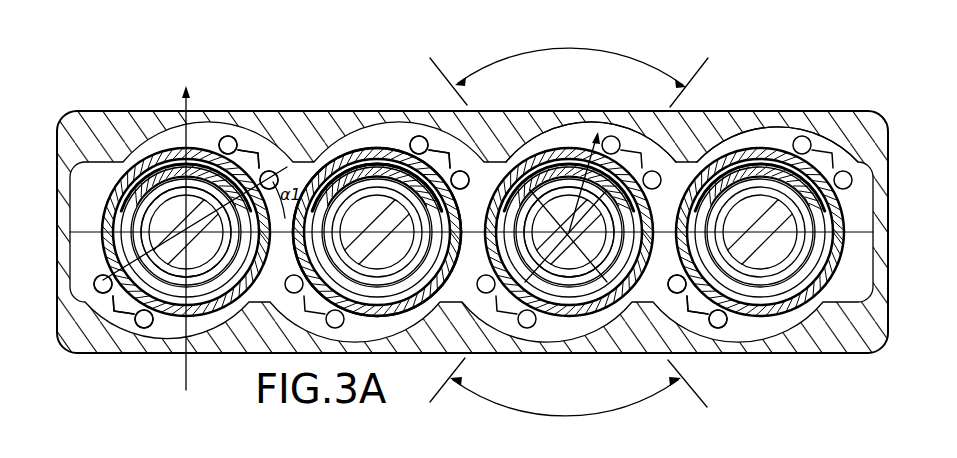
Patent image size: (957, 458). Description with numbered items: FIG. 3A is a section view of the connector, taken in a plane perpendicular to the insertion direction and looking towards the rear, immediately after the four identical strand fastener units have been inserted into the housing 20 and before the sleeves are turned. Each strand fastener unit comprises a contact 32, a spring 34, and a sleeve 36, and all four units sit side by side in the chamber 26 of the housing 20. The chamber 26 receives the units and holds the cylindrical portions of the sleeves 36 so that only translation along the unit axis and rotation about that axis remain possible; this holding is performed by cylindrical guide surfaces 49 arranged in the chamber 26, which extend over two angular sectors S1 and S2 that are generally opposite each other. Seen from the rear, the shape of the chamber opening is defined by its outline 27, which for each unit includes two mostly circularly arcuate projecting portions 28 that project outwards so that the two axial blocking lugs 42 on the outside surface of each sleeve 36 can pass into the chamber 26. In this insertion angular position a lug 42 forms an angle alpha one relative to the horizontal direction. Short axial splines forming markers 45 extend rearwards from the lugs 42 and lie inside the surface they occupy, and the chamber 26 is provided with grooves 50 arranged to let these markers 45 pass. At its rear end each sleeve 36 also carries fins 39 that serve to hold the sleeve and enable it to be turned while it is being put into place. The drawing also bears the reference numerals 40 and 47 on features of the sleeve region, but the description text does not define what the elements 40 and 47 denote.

The housing 20 is at (722, 132).
The chamber 26 is at (566, 190).
The outline 27 is at (702, 145).
The projecting portions 28 is at (230, 128).
The contact 32 is at (356, 170).
The spring 34 is at (320, 170).
The sleeve 36 is at (398, 148).
The fins 39 is at (735, 325).
The inner ring 40 is at (175, 213).
The axial blocking lugs 42 is at (125, 303).
The markers 45 is at (262, 150).
The retaining lug 47 is at (442, 150).
The cylindrical surfaces 49 is at (515, 146).
The grooves 50 is at (204, 118).
The angular sector S1 is at (567, 48).
The angular sector S2 is at (545, 420).